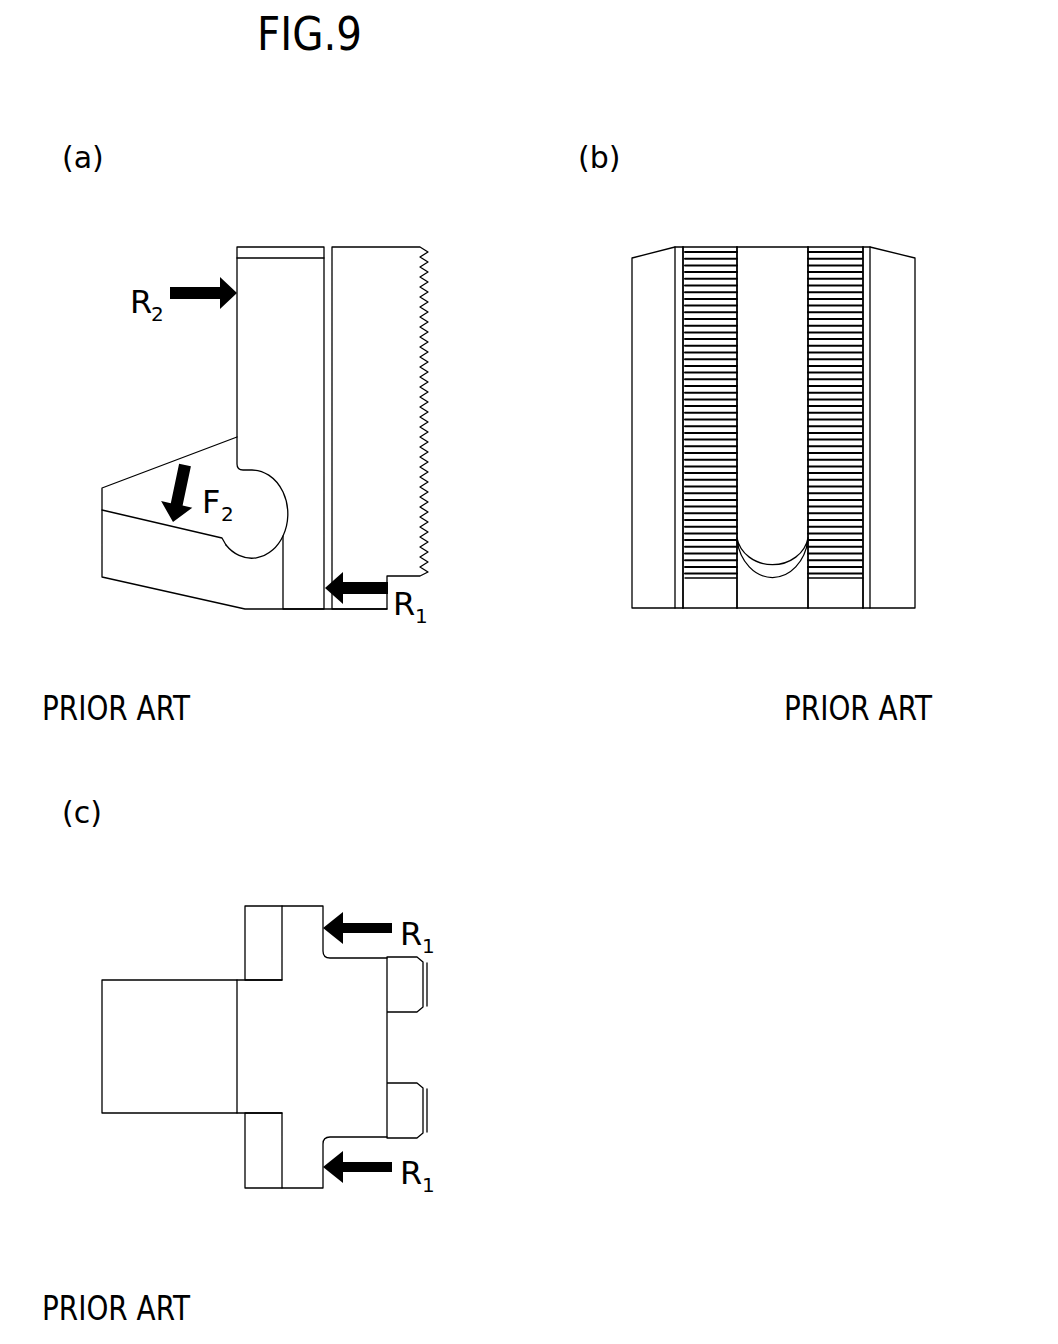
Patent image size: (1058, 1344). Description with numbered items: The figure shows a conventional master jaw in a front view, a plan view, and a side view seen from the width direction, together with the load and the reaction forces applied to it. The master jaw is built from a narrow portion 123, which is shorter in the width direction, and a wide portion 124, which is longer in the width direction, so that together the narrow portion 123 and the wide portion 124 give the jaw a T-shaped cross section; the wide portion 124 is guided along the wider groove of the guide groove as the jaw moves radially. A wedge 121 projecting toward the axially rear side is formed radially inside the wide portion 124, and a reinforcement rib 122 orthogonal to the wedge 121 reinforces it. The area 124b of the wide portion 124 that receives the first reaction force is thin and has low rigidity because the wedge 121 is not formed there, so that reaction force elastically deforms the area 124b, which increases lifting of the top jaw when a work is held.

The wedge 121 is at (155, 563).
The reinforcement rib 122 is at (157, 487).
The narrow portion 123 is at (371, 282).
The wide portion 124 is at (278, 282).
The area of the wide portion 124b is at (298, 922).